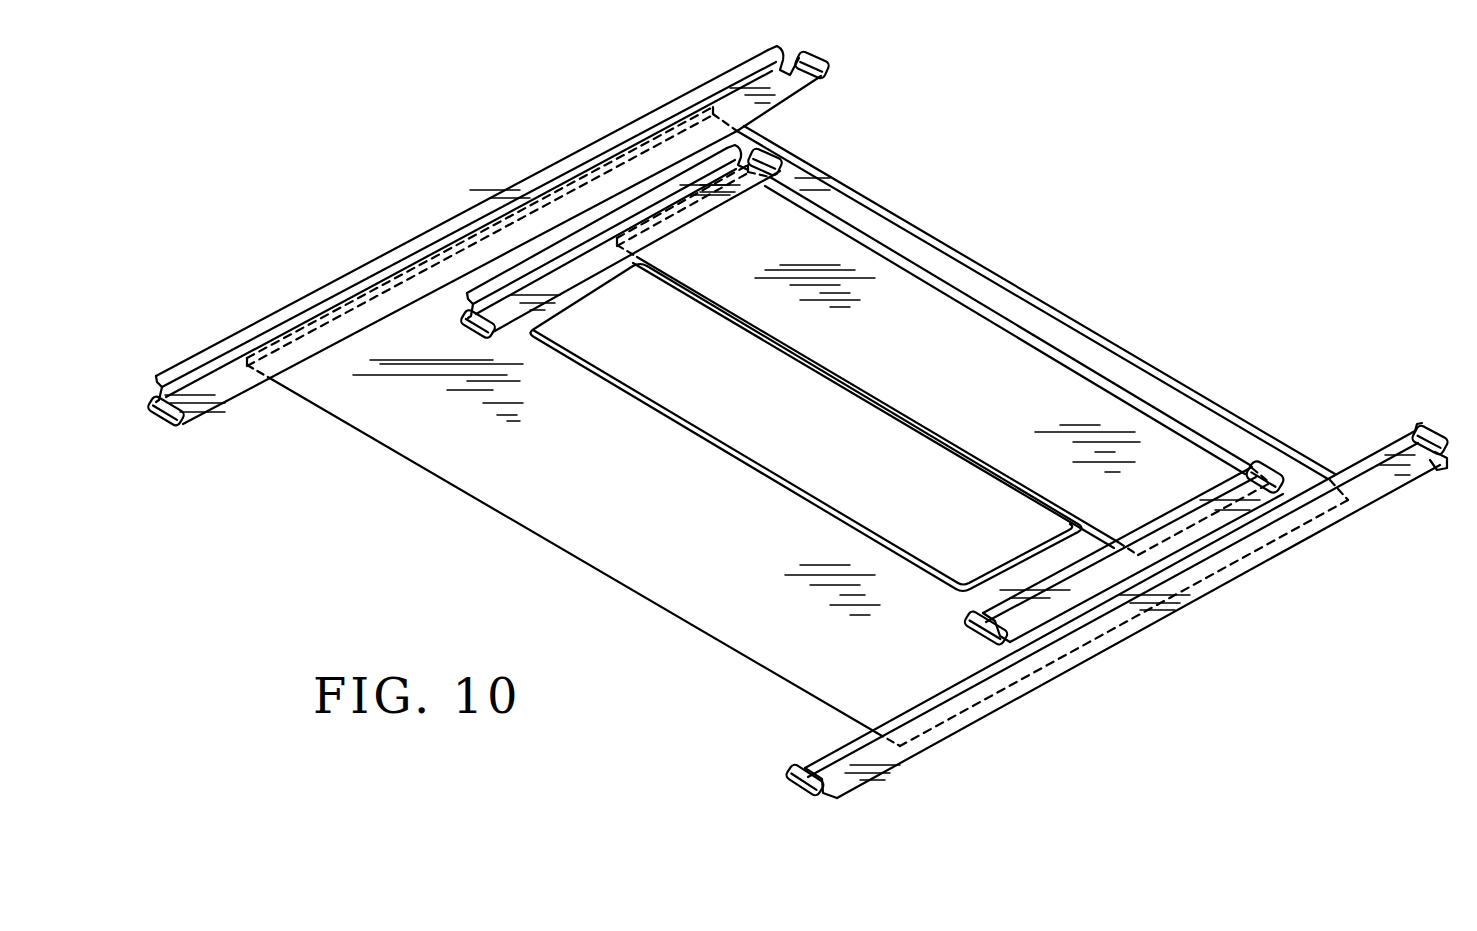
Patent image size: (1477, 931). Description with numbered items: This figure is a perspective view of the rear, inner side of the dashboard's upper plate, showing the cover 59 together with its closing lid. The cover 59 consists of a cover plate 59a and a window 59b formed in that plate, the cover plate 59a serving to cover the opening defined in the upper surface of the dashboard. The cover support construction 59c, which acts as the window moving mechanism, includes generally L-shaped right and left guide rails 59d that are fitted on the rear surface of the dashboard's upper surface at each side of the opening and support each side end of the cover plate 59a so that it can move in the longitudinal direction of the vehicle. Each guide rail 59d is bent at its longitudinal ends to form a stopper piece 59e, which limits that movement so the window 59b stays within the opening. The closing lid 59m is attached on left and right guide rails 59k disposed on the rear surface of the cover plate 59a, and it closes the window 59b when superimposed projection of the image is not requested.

The cover 59 is at (811, 434).
The cover plate 59a is at (380, 400).
The window 59b is at (699, 436).
The cover support construction 59c is at (1240, 588).
The guide rail 59d is at (1115, 620).
The stopper piece 59e is at (828, 74).
The guide rail 59k is at (582, 268).
The closing lid 59m is at (990, 372).